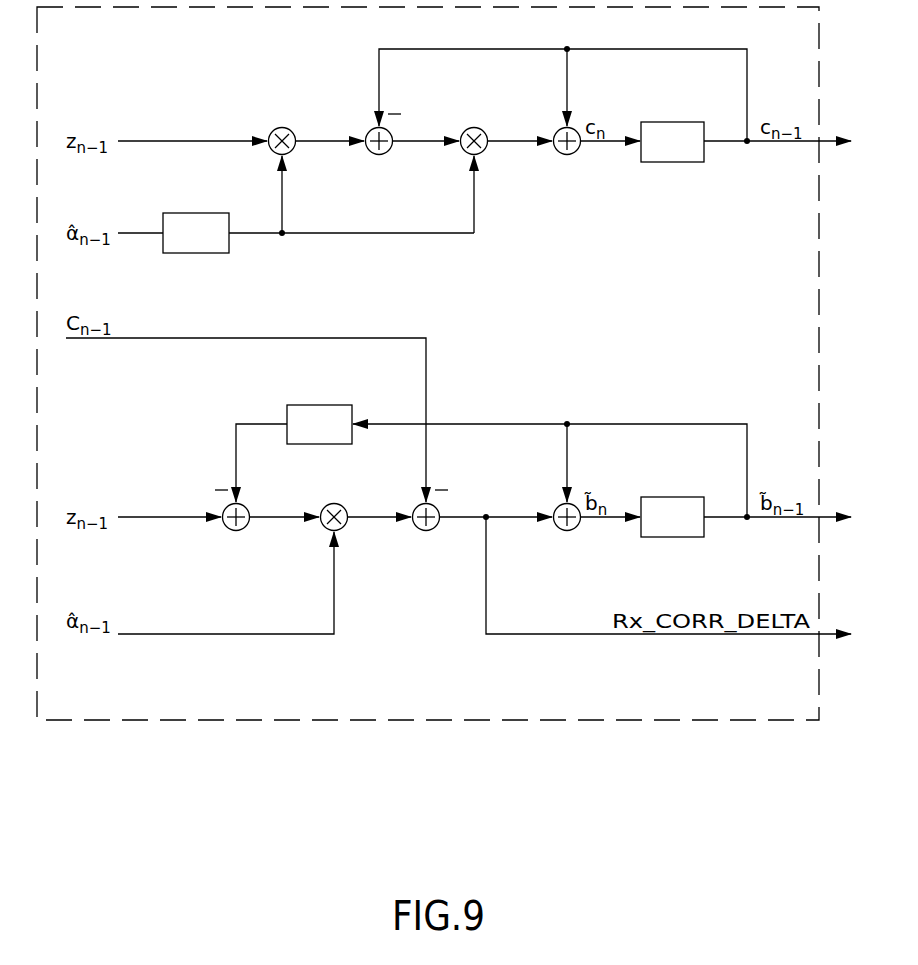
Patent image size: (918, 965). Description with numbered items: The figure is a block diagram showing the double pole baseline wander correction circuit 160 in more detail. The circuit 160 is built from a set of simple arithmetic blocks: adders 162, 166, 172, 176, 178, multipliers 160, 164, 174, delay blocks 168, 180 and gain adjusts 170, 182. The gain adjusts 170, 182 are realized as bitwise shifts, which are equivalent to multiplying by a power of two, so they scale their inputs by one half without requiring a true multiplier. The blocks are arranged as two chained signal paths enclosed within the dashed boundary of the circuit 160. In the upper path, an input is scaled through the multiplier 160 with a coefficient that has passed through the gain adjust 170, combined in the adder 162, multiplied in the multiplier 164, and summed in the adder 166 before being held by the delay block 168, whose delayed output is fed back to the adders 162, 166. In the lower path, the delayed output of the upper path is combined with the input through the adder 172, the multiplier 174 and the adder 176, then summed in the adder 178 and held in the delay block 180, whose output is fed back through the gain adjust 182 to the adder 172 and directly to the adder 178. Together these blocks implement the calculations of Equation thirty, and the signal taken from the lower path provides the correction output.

The double pole baseline wander correction circuit 160 is at (281, 127).
The adder 162 is at (379, 155).
The multiplier 164 is at (467, 128).
The adder 166 is at (567, 155).
The delay block 168 is at (665, 122).
The gain adjust 170 is at (201, 213).
The adder 172 is at (236, 531).
The multiplier 174 is at (328, 505).
The adder 176 is at (426, 531).
The adder 178 is at (567, 531).
The delay block 180 is at (665, 497).
The gain adjust 182 is at (318, 405).